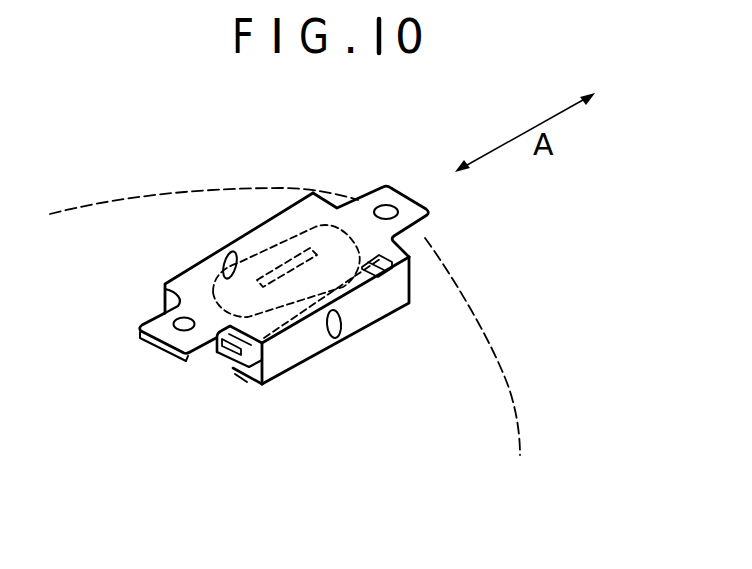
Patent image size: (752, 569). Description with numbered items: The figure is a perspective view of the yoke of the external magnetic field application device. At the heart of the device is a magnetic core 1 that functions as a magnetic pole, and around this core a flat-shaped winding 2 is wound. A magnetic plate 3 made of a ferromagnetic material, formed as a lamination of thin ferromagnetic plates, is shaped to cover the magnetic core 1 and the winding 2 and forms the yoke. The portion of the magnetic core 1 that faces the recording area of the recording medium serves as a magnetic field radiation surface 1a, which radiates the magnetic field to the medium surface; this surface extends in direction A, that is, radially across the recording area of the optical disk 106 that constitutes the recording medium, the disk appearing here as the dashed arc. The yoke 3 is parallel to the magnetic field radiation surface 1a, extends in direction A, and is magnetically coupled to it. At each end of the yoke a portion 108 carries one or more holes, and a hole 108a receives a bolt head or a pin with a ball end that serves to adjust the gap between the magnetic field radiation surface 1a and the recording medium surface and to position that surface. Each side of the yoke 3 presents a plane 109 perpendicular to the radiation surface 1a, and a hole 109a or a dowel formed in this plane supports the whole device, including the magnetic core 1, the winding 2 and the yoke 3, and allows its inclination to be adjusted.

The magnetic core 1 is at (424, 244).
The magnetic field radiation surface 1a is at (219, 362).
The flat-shaped winding 2 is at (388, 299).
The magnetic plate 3 is at (318, 234).
The optical disk 106 is at (113, 212).
The portion 108 is at (181, 356).
The hole 108a is at (173, 320).
The plane 109 is at (165, 285).
The hole 109a is at (235, 252).